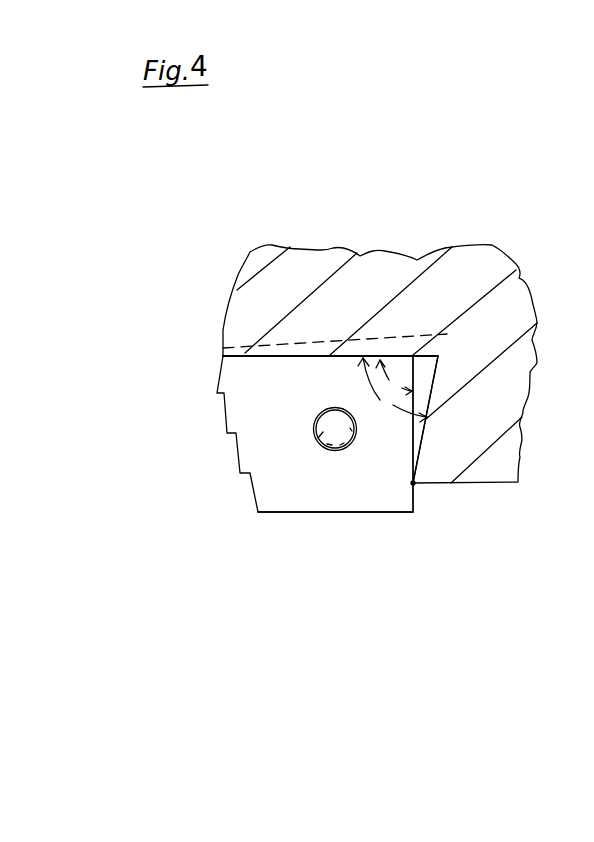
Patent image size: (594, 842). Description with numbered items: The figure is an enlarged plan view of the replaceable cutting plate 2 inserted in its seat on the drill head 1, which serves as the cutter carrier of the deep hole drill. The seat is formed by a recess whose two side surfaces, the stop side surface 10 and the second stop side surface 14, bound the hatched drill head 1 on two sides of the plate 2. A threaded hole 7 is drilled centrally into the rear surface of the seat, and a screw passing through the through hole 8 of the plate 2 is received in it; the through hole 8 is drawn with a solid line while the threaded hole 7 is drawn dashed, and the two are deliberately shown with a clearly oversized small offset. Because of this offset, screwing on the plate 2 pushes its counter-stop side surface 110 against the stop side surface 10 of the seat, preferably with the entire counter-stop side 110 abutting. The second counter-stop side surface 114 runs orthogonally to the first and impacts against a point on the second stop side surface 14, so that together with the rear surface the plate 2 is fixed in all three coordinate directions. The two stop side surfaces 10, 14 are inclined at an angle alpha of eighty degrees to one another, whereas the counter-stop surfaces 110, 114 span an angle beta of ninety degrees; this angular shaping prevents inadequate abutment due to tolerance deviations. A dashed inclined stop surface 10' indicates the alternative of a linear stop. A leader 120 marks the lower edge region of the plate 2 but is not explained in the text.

The drill head 1 is at (452, 296).
The replaceable cutting plate 2 is at (337, 488).
The threaded hole 7 is at (342, 450).
The through hole 8 is at (317, 447).
The stop side surface 10 is at (330, 310).
The inclined stop surface 10' is at (335, 215).
The second stop side surface 14 is at (413, 483).
The counter-stop side surface 110 is at (298, 356).
The second counter-stop side surface 114 is at (412, 418).
The bottom face of insert 120 is at (312, 512).